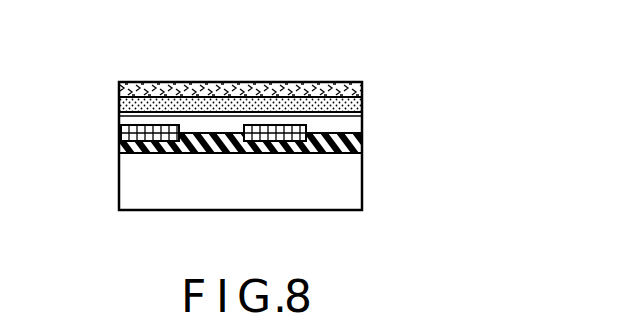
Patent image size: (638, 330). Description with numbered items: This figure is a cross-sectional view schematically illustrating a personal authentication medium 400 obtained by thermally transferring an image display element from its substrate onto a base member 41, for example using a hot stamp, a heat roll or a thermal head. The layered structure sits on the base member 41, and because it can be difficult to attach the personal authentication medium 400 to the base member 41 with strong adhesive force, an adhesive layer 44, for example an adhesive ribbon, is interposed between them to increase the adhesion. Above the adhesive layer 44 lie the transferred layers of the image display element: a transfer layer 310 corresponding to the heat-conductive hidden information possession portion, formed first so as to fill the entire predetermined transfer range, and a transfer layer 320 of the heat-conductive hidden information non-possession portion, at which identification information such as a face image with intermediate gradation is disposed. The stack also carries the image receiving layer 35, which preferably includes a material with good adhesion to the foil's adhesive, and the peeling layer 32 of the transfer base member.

The personal authentication medium 400 is at (414, 80).
The peeling layer 32 is at (119, 84).
The image receiving layer 35 is at (119, 104).
The transfer layer 310 is at (365, 114).
The transfer layer 320 is at (186, 134).
The adhesive layer 44 is at (330, 152).
The base member 41 is at (122, 188).